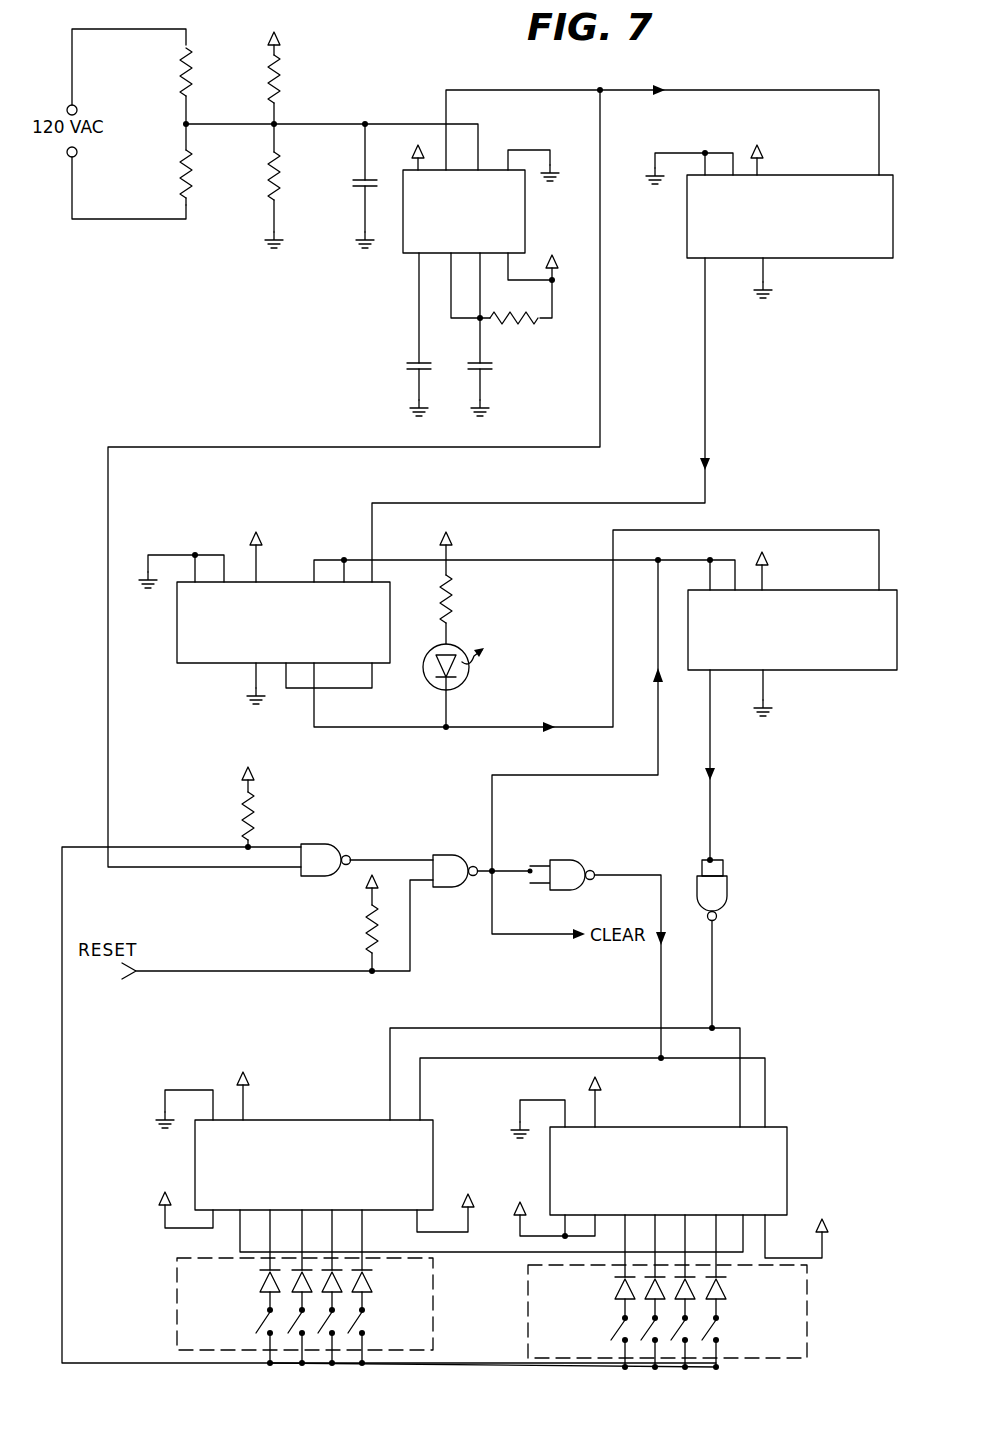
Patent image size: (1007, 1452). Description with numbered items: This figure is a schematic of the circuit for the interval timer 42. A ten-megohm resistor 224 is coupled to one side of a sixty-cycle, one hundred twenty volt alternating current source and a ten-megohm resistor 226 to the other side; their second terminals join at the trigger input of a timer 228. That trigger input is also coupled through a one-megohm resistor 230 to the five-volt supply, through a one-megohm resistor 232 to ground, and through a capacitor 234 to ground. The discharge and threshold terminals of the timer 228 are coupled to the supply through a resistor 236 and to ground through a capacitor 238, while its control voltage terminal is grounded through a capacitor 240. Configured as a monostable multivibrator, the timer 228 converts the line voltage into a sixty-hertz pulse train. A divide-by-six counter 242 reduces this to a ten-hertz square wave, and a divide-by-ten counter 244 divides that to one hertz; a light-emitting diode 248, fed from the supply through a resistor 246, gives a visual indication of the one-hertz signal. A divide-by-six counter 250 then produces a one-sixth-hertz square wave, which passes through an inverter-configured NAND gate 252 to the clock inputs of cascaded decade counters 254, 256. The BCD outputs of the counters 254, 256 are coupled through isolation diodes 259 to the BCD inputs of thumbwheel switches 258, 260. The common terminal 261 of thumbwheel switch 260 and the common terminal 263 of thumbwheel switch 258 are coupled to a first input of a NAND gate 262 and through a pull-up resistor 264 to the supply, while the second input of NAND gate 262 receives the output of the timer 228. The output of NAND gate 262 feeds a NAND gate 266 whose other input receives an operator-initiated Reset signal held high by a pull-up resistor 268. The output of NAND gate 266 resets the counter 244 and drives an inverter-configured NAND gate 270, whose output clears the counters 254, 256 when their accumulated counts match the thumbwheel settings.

The interval timer 42 is at (847, 82).
The resistor 224 is at (192, 72).
The resistor 226 is at (192, 186).
The timer 228 is at (525, 213).
The resistor 230 is at (280, 82).
The resistor 232 is at (280, 185).
The capacitor 234 is at (352, 171).
The resistor 236 is at (525, 322).
The capacitor 238 is at (490, 371).
The capacitor 240 is at (407, 368).
The divide-by-six counter 242 is at (812, 175).
The divide-by-ten counter 244 is at (177, 627).
The resistor 246 is at (452, 607).
The light-emitting diode 248 is at (460, 683).
The divide-by-six counter 250 is at (850, 672).
The NAND gate 252 is at (727, 902).
The counter 254 is at (652, 1127).
The counter 256 is at (332, 1100).
The thumbwheel switch 258 is at (175, 1310).
The isolation diodes 259 is at (755, 1318).
The thumbwheel switch 260 is at (812, 1314).
The common terminal 261 is at (620, 1342).
The NAND gate 262 is at (332, 843).
The common terminal 263 is at (368, 1336).
The pull-up resistor 264 is at (243, 815).
The NAND gate 266 is at (452, 858).
The pull-up resistor 268 is at (365, 934).
The NAND gate 270 is at (566, 858).